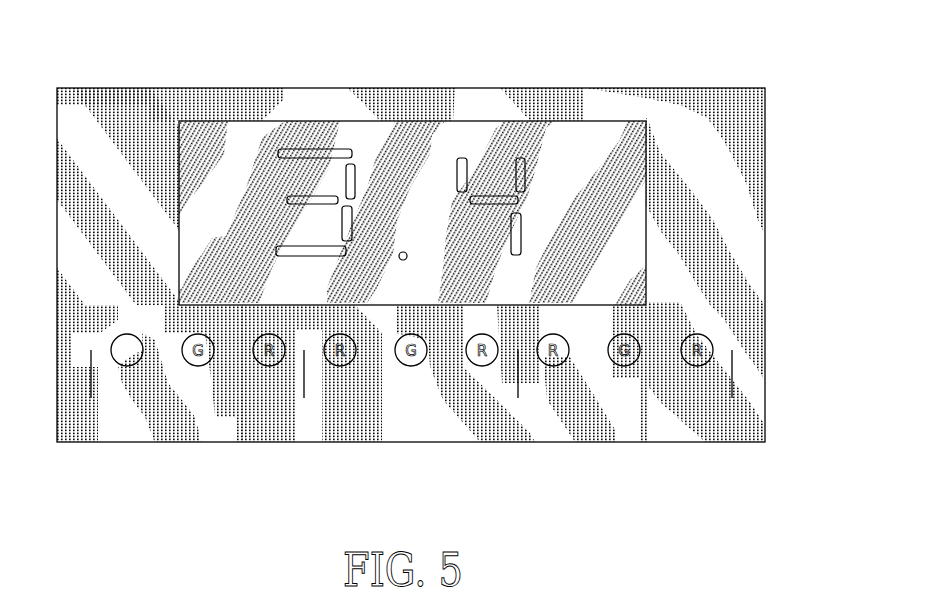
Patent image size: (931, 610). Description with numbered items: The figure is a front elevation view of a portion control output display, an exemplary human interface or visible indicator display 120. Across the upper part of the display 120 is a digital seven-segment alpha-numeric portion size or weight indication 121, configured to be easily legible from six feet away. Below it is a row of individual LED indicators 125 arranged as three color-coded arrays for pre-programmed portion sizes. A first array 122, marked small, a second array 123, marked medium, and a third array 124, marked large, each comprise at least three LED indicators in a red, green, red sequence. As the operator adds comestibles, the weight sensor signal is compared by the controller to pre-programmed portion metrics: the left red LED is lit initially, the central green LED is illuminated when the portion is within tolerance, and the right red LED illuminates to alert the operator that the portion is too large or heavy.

The visible indicator display 120 is at (707, 65).
The seven-segment alpha-numeric portion size or weight indication 121 is at (405, 148).
The first array 122 is at (232, 430).
The second array 123 is at (385, 430).
The third array 124 is at (653, 430).
The indicator light (LED) 125 is at (123, 335).